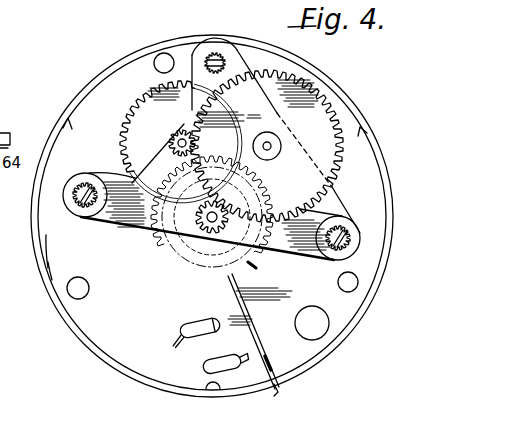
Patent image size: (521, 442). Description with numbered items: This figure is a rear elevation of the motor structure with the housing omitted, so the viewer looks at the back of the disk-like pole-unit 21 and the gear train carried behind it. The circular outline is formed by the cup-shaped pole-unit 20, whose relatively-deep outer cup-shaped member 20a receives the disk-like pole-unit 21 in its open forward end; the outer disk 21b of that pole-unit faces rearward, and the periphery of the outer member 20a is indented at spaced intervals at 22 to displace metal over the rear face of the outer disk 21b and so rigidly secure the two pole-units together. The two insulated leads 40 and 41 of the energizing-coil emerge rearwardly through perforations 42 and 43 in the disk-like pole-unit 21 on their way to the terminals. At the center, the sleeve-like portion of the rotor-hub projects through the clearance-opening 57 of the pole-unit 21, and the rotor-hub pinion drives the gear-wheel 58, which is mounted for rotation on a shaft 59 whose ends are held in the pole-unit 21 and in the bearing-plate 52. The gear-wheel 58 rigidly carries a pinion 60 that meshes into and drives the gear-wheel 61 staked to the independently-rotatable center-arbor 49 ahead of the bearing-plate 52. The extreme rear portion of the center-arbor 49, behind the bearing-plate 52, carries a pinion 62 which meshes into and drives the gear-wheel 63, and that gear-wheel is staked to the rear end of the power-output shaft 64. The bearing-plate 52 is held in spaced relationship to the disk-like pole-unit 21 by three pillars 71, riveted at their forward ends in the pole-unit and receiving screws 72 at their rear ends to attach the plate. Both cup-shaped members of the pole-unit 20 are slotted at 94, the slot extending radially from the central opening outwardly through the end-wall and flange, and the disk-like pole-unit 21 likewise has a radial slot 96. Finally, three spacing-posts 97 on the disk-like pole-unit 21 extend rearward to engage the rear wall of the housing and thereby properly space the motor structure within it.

The cup-shaped pole-unit 20 is at (103, 72).
The outer cup-shaped member 20a is at (129, 51).
The disk-like pole-unit 21 is at (52, 243).
The outer disk 21b is at (52, 262).
The indentations 22 is at (69, 128).
The insulated lead 40 is at (189, 322).
The insulated lead 41 is at (220, 357).
The perforation 42 is at (218, 322).
The perforation 43 is at (203, 363).
The center-arbor 49 is at (198, 219).
The bearing-plate 52 is at (105, 222).
The clearance-opening 57 is at (173, 250).
The gear-wheel 58 is at (125, 118).
The shaft 59 is at (170, 143).
The pinion 60 is at (184, 124).
The gear-wheel 61 is at (252, 266).
The pinion 62 is at (213, 233).
The gear-wheel 63 is at (335, 115).
The power-output shaft 64 is at (281, 143).
The pillars 71 is at (83, 206).
The screws 72 is at (78, 198).
The slot 94 is at (285, 397).
The radial slot 96 is at (250, 330).
The spacing-posts 97 is at (67, 288).